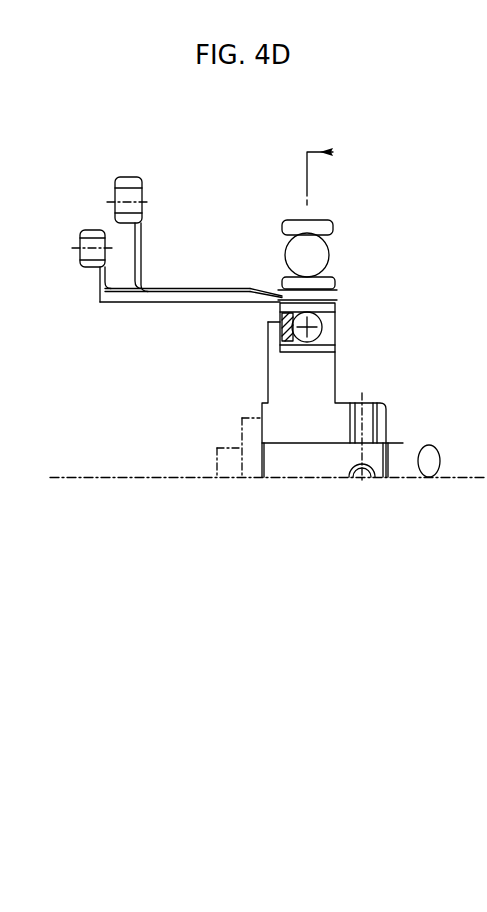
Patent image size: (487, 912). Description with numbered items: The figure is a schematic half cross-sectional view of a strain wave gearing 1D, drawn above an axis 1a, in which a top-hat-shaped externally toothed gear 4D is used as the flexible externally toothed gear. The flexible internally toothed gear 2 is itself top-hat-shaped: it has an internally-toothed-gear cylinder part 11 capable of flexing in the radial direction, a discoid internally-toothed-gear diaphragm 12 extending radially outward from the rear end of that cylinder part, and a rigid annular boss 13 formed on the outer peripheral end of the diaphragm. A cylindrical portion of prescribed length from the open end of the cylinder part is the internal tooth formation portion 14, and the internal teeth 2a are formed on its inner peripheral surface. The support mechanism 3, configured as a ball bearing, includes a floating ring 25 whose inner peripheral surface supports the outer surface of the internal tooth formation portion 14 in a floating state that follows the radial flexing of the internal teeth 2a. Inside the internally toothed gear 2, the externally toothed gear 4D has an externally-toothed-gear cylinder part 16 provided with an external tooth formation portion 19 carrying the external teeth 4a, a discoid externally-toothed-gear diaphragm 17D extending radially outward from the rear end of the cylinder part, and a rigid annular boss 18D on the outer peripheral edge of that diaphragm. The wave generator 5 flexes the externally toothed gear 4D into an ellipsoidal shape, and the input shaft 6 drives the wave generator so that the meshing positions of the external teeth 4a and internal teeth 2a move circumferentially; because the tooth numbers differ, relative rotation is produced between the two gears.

The strain wave gearing 1D is at (369, 205).
The axis 1a is at (414, 481).
The flexible internally toothed gear 2 is at (358, 282).
The internal teeth 2a is at (353, 288).
The support mechanism 3 is at (342, 255).
The top-hat-shaped externally toothed gear 4D is at (364, 327).
The external teeth 4a is at (287, 327).
The wave generator 5 is at (354, 380).
The input shaft 6 is at (413, 442).
The internally-toothed-gear cylinder part 11 is at (231, 287).
The internally-toothed-gear diaphragm 12 is at (143, 247).
The rigid annular boss 13 is at (115, 184).
The internal tooth formation portion 14 is at (279, 304).
The externally-toothed-gear cylinder part 16 is at (192, 304).
The externally-toothed-gear diaphragm 17D is at (100, 284).
The rigid annular boss 18D is at (82, 230).
The external tooth formation portion 19 is at (279, 330).
The floating ring 25 is at (272, 274).